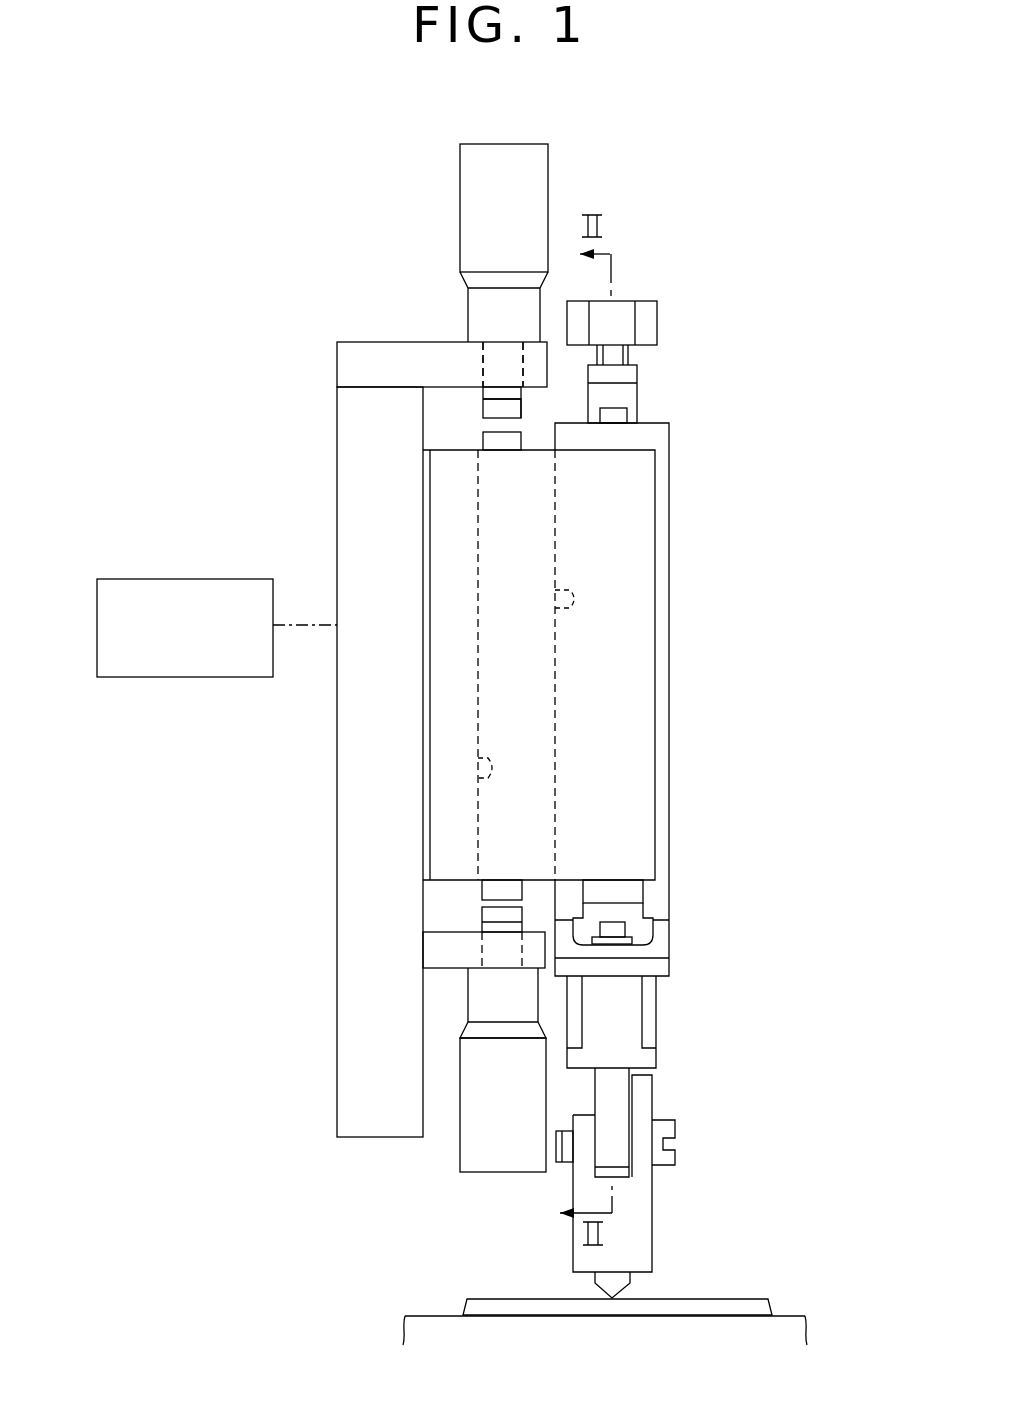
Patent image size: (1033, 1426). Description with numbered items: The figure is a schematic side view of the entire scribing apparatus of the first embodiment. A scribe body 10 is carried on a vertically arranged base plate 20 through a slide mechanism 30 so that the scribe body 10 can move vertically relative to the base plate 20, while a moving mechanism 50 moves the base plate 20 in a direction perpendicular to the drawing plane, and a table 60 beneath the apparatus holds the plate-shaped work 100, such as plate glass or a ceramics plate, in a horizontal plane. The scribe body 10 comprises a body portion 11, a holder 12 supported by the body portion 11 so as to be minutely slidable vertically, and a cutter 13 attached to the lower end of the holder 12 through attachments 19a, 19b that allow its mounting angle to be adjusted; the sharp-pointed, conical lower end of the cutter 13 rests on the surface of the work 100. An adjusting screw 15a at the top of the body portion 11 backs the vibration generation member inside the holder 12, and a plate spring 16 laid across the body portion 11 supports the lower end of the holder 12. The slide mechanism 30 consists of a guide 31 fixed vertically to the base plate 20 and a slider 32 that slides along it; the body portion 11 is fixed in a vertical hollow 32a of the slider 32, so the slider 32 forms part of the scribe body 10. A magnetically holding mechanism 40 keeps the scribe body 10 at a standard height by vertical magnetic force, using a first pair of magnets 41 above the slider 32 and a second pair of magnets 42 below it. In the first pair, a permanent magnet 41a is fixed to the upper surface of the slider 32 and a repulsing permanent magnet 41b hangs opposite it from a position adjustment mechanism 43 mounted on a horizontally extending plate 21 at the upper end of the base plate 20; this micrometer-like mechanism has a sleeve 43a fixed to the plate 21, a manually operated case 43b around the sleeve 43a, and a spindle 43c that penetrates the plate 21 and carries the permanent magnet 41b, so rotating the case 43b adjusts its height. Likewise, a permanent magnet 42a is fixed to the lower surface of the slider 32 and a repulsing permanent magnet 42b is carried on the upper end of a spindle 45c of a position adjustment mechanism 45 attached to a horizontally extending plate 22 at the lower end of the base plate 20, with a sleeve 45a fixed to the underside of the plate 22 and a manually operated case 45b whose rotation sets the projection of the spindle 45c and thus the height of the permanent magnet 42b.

The scribe body 10 is at (691, 799).
The body portion 11 is at (670, 748).
The holder 12 is at (657, 1015).
The cutter 13 is at (632, 1283).
The adjusting screw 15a is at (637, 357).
The plate spring 16 is at (615, 928).
The attachment 19a is at (657, 1062).
The attachment 19b is at (653, 1195).
The base plate 20 is at (363, 492).
The horizontally extending plate 21 is at (382, 342).
The horizontally extending plate 22 is at (435, 944).
The slide mechanism 30 is at (444, 665).
The guide 31 is at (490, 768).
The slider 32 is at (421, 665).
The hollow 32a is at (556, 604).
The magnetically holding mechanism 40 is at (456, 579).
The first pair of magnets 41 is at (458, 459).
The permanent magnet 41a is at (502, 440).
The permanent magnet 41b is at (522, 412).
The second pair of magnets 42 is at (452, 871).
The permanent magnet 42a is at (497, 892).
The permanent magnet 42b is at (515, 917).
The position adjustment mechanism 43 is at (531, 239).
The sleeve 43a is at (497, 305).
The manually operated case 43b is at (502, 180).
The spindle 43c is at (493, 369).
The position adjustment mechanism 45 is at (399, 1107).
The sleeve 45a is at (485, 1002).
The manually operated case 45b is at (479, 1091).
The spindle 45c is at (490, 953).
The moving mechanism 50 is at (198, 579).
The table 60 is at (785, 1316).
The work 100 is at (737, 1299).